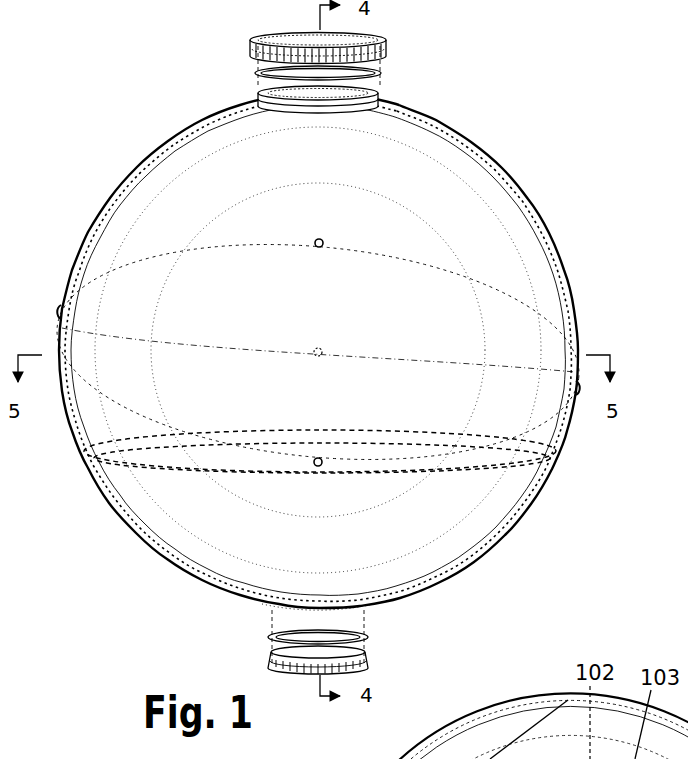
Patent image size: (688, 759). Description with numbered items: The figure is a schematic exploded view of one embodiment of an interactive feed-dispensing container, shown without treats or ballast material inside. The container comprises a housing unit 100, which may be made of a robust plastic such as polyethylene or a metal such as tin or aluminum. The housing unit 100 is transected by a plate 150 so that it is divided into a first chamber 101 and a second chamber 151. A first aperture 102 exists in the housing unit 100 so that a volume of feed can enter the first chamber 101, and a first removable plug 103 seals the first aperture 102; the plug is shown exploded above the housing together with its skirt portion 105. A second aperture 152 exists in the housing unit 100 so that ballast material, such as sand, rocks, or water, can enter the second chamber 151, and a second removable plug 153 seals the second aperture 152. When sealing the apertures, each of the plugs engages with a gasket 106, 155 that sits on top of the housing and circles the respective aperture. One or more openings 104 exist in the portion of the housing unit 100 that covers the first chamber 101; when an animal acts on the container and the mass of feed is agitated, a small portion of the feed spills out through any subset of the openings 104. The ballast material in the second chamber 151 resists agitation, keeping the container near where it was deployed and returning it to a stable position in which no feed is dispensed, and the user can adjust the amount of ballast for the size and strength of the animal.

The housing unit 100 is at (113, 153).
The first chamber 101 is at (436, 297).
The first aperture 102 is at (268, 92).
The first removable plug 103 is at (402, 44).
The openings 104 is at (60, 312).
The cap skirt 105 is at (388, 55).
The gasket 106 is at (262, 71).
The plate 150 is at (420, 470).
The second chamber 151 is at (415, 517).
The second aperture 152 is at (298, 614).
The second removable plug 153 is at (355, 655).
The gasket 155 is at (365, 637).